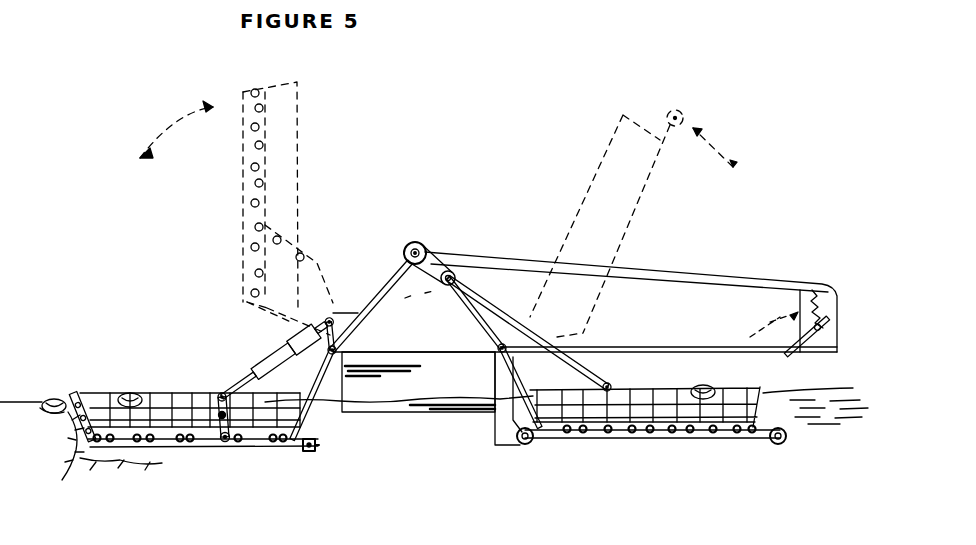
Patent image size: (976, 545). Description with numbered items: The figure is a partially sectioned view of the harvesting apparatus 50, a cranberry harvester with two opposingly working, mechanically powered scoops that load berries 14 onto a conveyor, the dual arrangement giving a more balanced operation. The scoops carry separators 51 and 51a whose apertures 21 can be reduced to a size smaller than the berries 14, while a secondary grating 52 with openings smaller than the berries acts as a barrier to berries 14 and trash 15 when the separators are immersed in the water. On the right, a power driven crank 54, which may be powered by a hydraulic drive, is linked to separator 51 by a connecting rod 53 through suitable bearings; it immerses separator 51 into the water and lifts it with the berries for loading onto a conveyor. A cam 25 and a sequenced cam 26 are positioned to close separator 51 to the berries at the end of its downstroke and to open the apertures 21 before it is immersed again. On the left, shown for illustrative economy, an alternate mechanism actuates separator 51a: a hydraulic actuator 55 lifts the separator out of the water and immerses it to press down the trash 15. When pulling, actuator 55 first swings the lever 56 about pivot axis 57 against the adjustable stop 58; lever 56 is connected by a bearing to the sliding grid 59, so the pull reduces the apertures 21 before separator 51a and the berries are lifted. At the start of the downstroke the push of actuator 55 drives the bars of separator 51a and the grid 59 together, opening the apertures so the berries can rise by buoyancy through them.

The berries 14 is at (58, 400).
The trash 15 is at (62, 474).
The apertures 21 is at (249, 440).
The cam 25 is at (507, 447).
The sequenced cam 26 is at (792, 352).
The harvesting apparatus 50 is at (468, 250).
The separator 51 is at (636, 432).
The separator 51a is at (202, 448).
The secondary grating 52 is at (176, 398).
The connecting rod 53 is at (507, 312).
The power driven crank 54 is at (420, 248).
The hydraulic actuator 55 is at (285, 343).
The lever 56 is at (212, 394).
The pivot axis 57 is at (225, 445).
The adjustable stop 58 is at (305, 452).
The sliding grid 59 is at (182, 448).